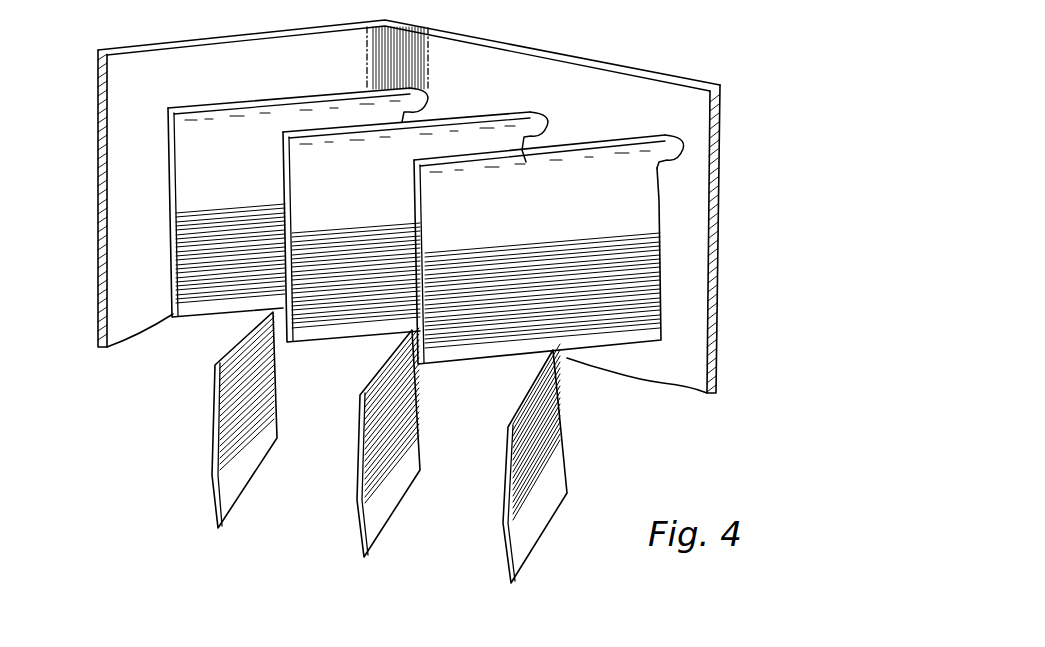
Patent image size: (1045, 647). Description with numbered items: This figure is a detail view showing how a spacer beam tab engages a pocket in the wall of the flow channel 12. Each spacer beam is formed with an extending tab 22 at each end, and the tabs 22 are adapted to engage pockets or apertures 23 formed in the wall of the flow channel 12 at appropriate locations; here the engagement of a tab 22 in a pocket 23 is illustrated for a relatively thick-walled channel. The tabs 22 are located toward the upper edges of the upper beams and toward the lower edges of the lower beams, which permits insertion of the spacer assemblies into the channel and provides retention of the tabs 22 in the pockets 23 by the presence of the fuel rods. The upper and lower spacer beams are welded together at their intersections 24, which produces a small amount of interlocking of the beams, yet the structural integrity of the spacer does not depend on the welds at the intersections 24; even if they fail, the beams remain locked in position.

The flow channel 12 is at (190, 42).
The tab 22 is at (541, 112).
The pocket 23 is at (427, 98).
The intersection 24 is at (387, 332).